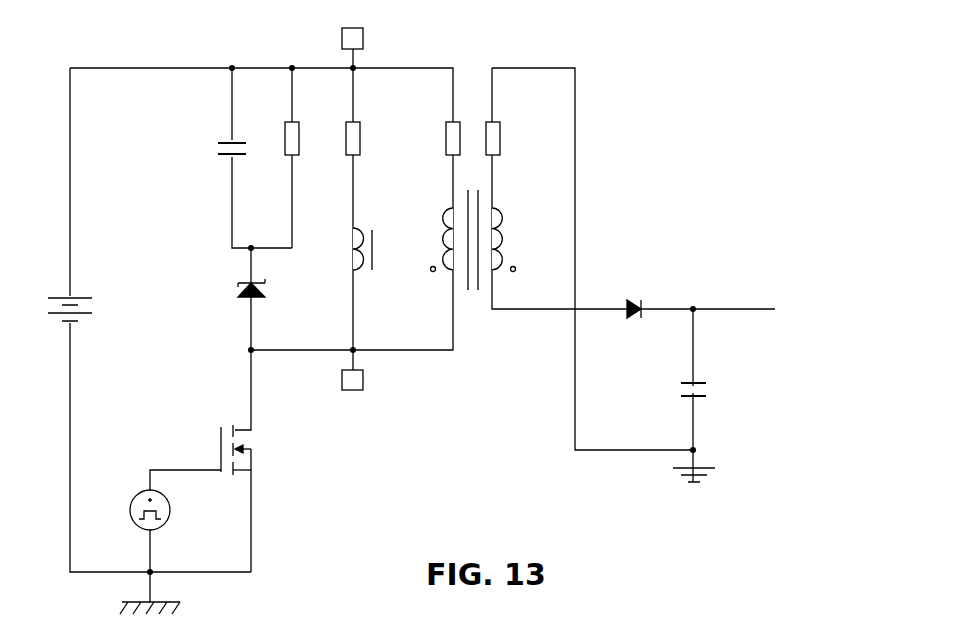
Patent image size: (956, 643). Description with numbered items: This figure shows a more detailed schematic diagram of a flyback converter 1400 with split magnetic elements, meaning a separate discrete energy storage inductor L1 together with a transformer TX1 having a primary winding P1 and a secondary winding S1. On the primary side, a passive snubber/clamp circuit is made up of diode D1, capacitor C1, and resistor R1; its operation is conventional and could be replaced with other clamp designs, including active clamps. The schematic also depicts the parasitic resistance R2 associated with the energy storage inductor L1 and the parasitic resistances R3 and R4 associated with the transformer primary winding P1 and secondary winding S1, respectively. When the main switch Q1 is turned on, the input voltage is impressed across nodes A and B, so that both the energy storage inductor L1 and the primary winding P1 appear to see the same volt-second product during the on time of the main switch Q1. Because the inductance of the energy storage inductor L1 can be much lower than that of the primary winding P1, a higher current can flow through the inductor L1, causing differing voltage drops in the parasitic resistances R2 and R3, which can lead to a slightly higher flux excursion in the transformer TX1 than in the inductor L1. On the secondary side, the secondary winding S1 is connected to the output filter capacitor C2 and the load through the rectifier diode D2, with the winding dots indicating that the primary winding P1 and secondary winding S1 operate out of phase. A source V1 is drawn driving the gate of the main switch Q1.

The flyback converter 1400 is at (650, 70).
The capacitor C1 is at (241, 142).
The resistor R1 is at (300, 135).
The parasitic resistance R2 is at (361, 135).
The parasitic resistance R3 is at (442, 135).
The parasitic resistance R4 is at (502, 135).
The energy storage inductor L1 is at (371, 240).
The transformer TX1 is at (468, 224).
The primary winding P1 is at (434, 240).
The secondary winding S1 is at (506, 240).
The diode D1 is at (239, 284).
The rectifier diode D2 is at (633, 300).
The output filter capacitor C2 is at (704, 385).
The main switch Q1 is at (236, 457).
The pulse voltage source V1 is at (139, 509).